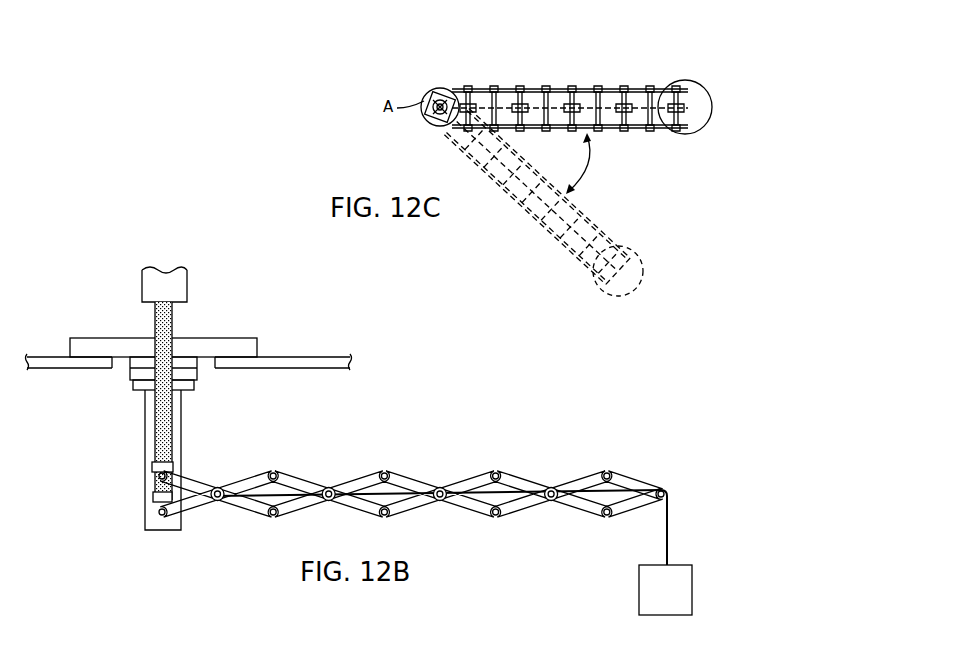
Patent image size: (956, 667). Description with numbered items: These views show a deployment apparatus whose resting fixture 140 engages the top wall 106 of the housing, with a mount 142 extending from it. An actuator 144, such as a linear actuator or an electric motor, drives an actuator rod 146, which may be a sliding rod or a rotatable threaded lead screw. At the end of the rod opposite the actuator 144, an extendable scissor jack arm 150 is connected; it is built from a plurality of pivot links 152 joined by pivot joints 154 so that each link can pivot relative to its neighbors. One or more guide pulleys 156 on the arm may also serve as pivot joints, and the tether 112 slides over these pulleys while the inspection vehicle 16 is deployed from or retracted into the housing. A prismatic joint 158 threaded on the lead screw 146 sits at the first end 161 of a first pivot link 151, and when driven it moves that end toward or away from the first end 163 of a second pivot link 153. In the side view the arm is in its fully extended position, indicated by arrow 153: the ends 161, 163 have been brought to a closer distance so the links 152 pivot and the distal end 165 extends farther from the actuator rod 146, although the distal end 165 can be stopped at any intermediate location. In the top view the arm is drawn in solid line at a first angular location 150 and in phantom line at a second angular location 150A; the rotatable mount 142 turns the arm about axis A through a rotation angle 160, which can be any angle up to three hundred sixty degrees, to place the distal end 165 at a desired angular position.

In FIG. 12B, the inspection vehicle 16 is at (674, 599).
In FIG. 12B, the top wall 106 is at (292, 357).
In FIG. 12B, the tether 112 is at (664, 540).
In FIG. 12B, the resting fixture 140 is at (232, 340).
In FIG. 12C, the mount 142 is at (438, 88).
In FIG. 12B, the mount 142 is at (137, 390).
In FIG. 12B, the actuator 144 is at (150, 288).
In FIG. 12B, the actuator rod 146 is at (172, 408).
In FIG. 12C, the extendable scissor jack arm 150 is at (610, 88).
In FIG. 12B, the extendable scissor jack arm 150 is at (617, 478).
In FIG. 12C, the extendable scissor jack arm in second angular location 150A is at (530, 222).
In FIG. 12B, the first pivot link 151 is at (200, 476).
In FIG. 12B, the pivot links 152 is at (249, 526).
In FIG. 12B, the second pivot link 153 is at (190, 505).
In FIG. 12B, the pivot joints 154 is at (163, 517).
In FIG. 12B, the guide pulleys 156 is at (329, 488).
In FIG. 12B, the prismatic joint 158 is at (152, 478).
In FIG. 12C, the rotation angle 160 is at (592, 170).
In FIG. 12B, the first end of first pivot link 161 is at (160, 470).
In FIG. 12B, the first end of second pivot link 163 is at (158, 511).
In FIG. 12C, the distal end 165 is at (688, 88).
In FIG. 12B, the distal end 165 is at (664, 488).